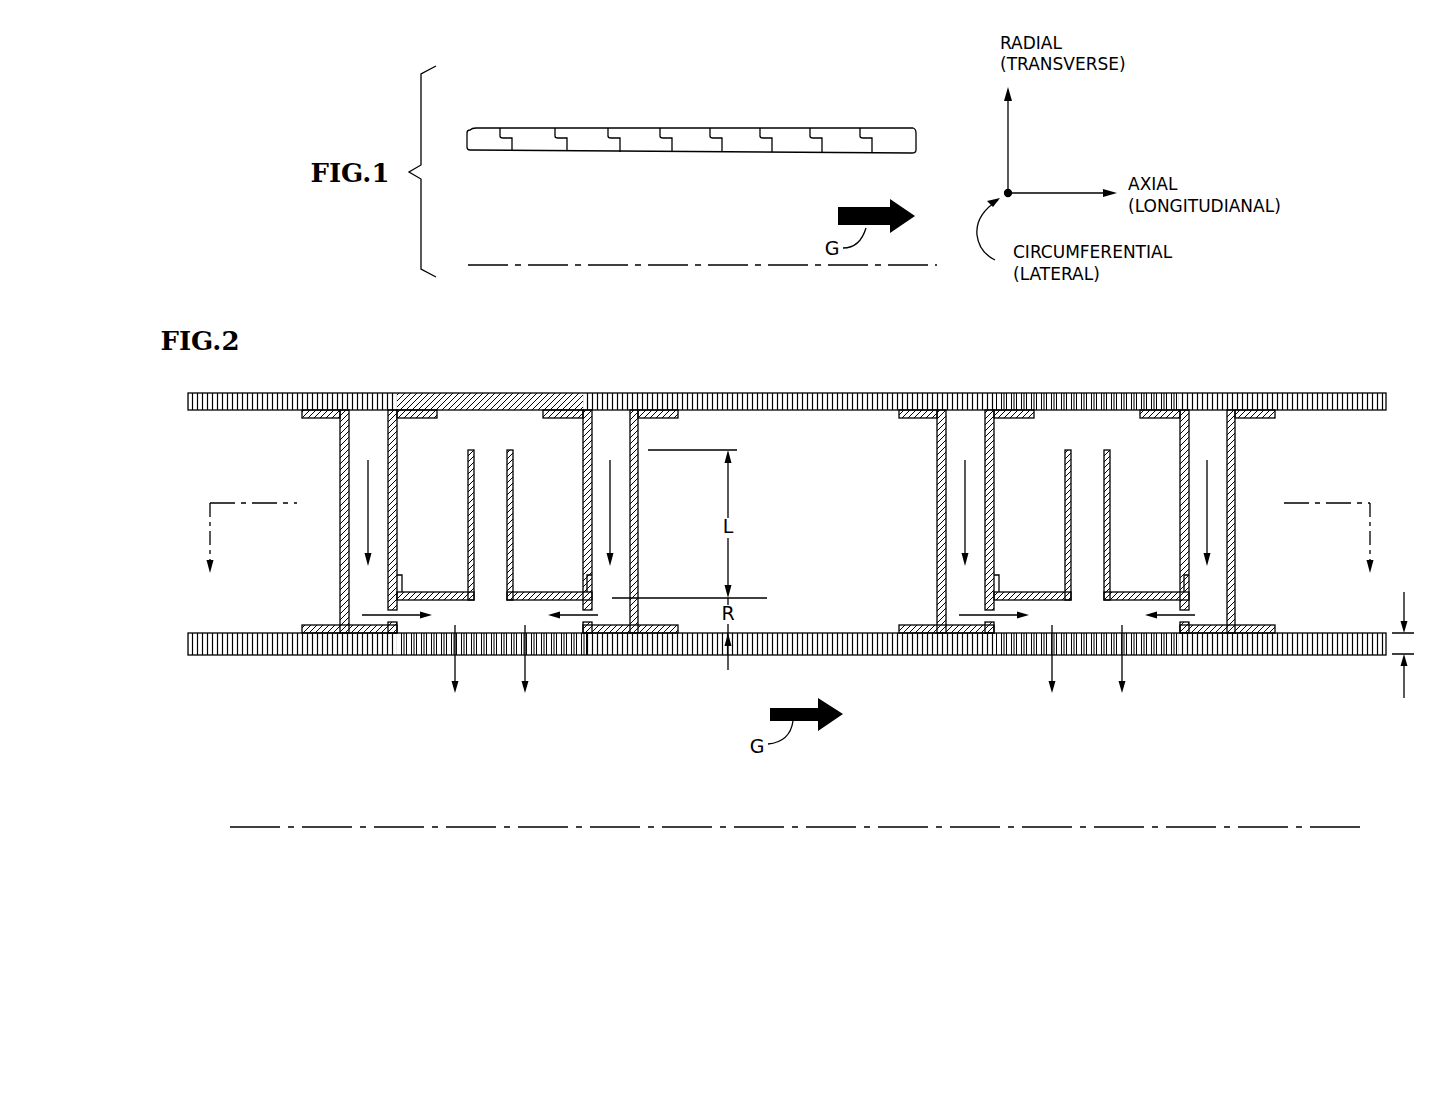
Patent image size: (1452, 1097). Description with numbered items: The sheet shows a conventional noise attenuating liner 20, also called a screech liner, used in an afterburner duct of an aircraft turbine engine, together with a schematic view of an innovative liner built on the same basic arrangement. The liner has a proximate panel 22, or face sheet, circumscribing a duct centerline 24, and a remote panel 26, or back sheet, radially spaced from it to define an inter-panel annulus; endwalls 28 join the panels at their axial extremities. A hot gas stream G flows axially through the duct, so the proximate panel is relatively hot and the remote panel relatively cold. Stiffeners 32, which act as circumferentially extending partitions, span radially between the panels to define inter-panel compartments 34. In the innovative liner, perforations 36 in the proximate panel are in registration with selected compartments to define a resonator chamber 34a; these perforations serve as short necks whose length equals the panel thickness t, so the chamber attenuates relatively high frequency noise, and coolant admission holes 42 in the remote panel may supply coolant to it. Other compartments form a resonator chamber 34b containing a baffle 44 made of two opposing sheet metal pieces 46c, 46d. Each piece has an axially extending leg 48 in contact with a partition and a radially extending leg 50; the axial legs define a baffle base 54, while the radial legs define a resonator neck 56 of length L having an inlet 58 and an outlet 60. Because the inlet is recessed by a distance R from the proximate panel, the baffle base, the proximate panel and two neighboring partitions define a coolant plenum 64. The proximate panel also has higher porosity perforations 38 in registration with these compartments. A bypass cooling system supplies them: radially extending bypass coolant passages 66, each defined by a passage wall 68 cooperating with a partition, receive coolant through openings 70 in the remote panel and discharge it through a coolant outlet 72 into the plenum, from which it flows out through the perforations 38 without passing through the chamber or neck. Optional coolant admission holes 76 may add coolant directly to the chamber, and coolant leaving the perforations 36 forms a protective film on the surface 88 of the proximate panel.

In FIG. 1, the noise attenuating liner 20 is at (838, 103).
In FIG. 1, the proximate panel 22 is at (676, 148).
In FIG. 2, the proximate panel 22 is at (1296, 672).
In FIG. 1, the duct centerline 24 is at (606, 265).
In FIG. 2, the duct centerline 24 is at (640, 827).
In FIG. 1, the remote panel 26 is at (697, 128).
In FIG. 2, the remote panel 26 is at (1287, 386).
In FIG. 1, the endwalls 28 is at (466, 148).
In FIG. 1, the stiffeners 32 is at (600, 130).
In FIG. 2, the stiffeners 32 is at (398, 548).
In FIG. 1, the inter-panel compartments 34 is at (582, 146).
In FIG. 2, the resonator chamber 34a is at (244, 541).
In FIG. 2, the resonator chamber 34b is at (463, 439).
In FIG. 2, the perforations 36 is at (245, 656).
In FIG. 2, the perforations 38 is at (563, 657).
In FIG. 2, the coolant admission holes 42 is at (218, 396).
In FIG. 2, the baffle 44 is at (451, 600).
In FIG. 2, the sheet metal piece 46c is at (467, 475).
In FIG. 2, the sheet metal piece 46d is at (517, 470).
In FIG. 2, the axially extending leg 48 is at (457, 589).
In FIG. 2, the radially extending leg 50 is at (467, 535).
In FIG. 2, the baffle base 54 is at (518, 601).
In FIG. 2, the resonator neck 56 is at (482, 508).
In FIG. 2, the inlet 58 is at (480, 601).
In FIG. 2, the outlet 60 is at (488, 462).
In FIG. 2, the coolant plenum 64 is at (531, 655).
In FIG. 2, the bypass coolant passages 66 is at (358, 437).
In FIG. 2, the passage wall 68 is at (340, 500).
In FIG. 2, the openings 70 is at (368, 393).
In FIG. 2, the coolant outlet 72 is at (390, 613).
In FIG. 2, the coolant admission holes 76 is at (1093, 393).
In FIG. 2, the surface 88 is at (690, 655).